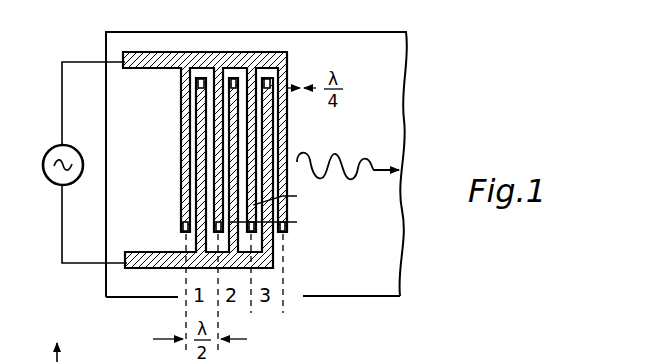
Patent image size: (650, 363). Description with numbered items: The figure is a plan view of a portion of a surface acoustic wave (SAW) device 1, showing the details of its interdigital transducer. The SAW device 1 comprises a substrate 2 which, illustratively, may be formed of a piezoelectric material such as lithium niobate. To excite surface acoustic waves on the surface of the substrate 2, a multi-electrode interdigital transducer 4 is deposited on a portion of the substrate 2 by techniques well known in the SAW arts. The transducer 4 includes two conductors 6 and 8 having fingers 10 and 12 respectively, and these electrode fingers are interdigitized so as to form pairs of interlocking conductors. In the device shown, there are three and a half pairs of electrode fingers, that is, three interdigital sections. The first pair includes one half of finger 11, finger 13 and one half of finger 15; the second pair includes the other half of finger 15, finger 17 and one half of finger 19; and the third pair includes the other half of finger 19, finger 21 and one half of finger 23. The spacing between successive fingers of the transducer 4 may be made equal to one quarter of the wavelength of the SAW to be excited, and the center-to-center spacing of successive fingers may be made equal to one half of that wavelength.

The SAW device 1 is at (345, 25).
The substrate 2 is at (363, 297).
The interdigital transducer 4 is at (160, 174).
The conductor 6 is at (143, 58).
The conductor 8 is at (143, 268).
The fingers 10 is at (185, 77).
The finger 11 is at (182, 205).
The fingers 12 is at (198, 235).
The finger 13 is at (196, 258).
The finger 15 is at (212, 128).
The finger 17 is at (274, 221).
The finger 19 is at (285, 195).
The finger 21 is at (292, 147).
The finger 23 is at (288, 121).